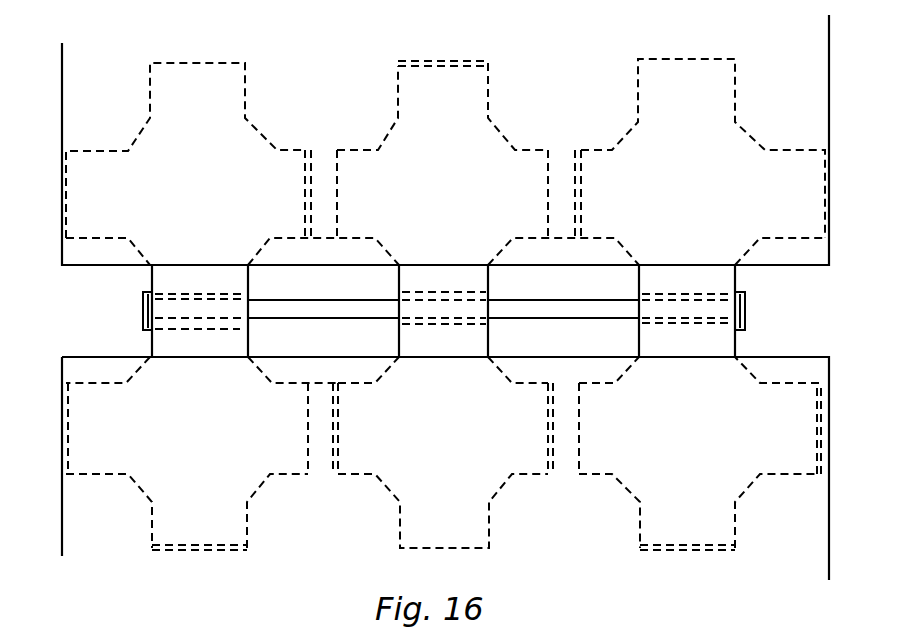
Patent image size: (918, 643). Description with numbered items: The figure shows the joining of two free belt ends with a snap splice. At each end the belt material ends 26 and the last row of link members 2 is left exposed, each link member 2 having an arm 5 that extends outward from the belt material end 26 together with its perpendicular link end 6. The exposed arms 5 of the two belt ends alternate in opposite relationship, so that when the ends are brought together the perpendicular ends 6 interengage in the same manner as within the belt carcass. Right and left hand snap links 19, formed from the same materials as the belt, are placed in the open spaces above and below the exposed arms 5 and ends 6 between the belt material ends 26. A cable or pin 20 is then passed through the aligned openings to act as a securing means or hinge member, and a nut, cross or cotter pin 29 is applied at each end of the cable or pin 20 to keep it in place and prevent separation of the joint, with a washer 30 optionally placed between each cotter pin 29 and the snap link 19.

The link member 2 is at (235, 132).
The arm 5 is at (178, 282).
The link end 6 is at (238, 296).
The snap link 19 is at (431, 283).
The cable or pin 20 is at (520, 310).
The belt material end 26 is at (66, 356).
The nut, cross or cotter pin 29 is at (141, 312).
The washer 30 is at (152, 330).